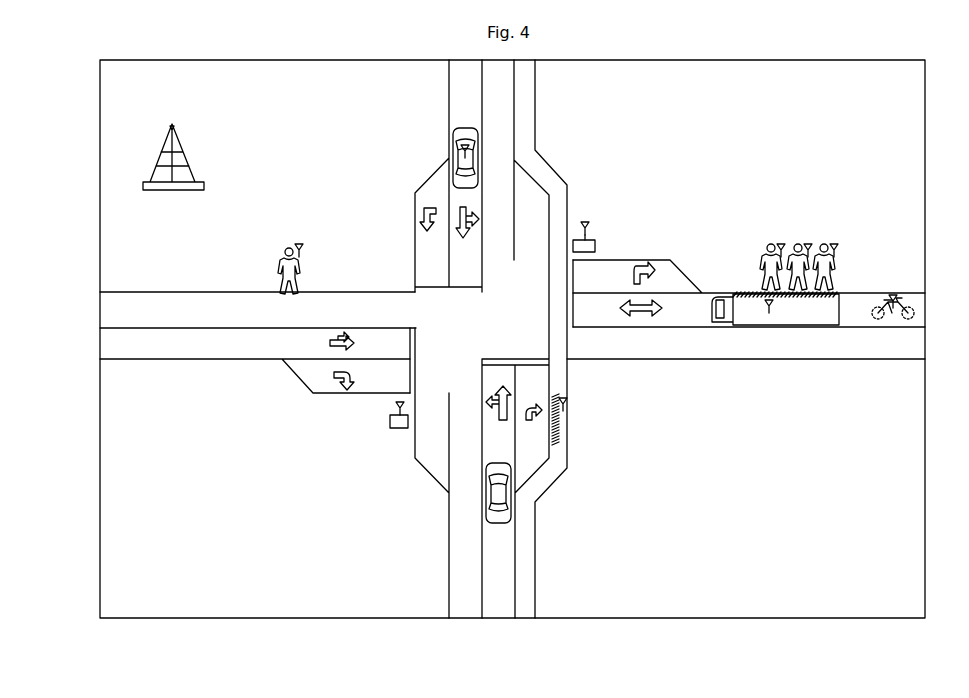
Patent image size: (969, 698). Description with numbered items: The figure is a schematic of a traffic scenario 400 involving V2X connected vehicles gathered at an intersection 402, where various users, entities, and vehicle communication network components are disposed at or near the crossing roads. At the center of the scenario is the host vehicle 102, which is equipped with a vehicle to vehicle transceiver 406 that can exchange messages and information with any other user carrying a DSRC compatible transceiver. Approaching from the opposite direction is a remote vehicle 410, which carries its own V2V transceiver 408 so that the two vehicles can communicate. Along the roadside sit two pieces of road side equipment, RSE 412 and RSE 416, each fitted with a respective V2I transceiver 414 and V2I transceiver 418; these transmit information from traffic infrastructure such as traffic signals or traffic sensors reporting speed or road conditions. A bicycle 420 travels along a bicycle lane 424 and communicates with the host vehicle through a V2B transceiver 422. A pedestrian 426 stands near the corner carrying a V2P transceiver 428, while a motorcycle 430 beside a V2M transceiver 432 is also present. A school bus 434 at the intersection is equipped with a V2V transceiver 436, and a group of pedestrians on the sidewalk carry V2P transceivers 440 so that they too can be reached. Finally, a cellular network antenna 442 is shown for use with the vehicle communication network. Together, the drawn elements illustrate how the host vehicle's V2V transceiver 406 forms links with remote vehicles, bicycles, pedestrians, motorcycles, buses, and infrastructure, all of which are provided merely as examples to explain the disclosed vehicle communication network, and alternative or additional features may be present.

The host vehicle 102 is at (498, 522).
The traffic scenario 400 is at (78, 117).
The intersection 402 is at (556, 168).
The vehicle to vehicle (V2V) transceiver 406 is at (500, 490).
The V2V transceiver 408 is at (456, 161).
The remote vehicle 410 is at (465, 144).
The road side equipment (RSE) 412 is at (390, 420).
The V2I transceiver 414 is at (397, 402).
The road side equipment (RSE) 416 is at (596, 247).
The V2I transceiver 418 is at (591, 224).
The bicycle 420 is at (560, 425).
The V2B (vehicle to bicycle) transceiver 422 is at (568, 401).
The bicycle lane 424 is at (560, 370).
The pedestrian 426 is at (280, 265).
The V2P (vehicle to pedestrian) transceiver 428 is at (299, 247).
The motorcycle 430 is at (876, 304).
The V2M (vehicle to motorcycle) transceiver 432 is at (894, 294).
The school bus 434 is at (730, 300).
The V2V transceiver 436 is at (770, 236).
The V2P transceivers 440 is at (809, 242).
The cellular network antenna 442 is at (184, 143).